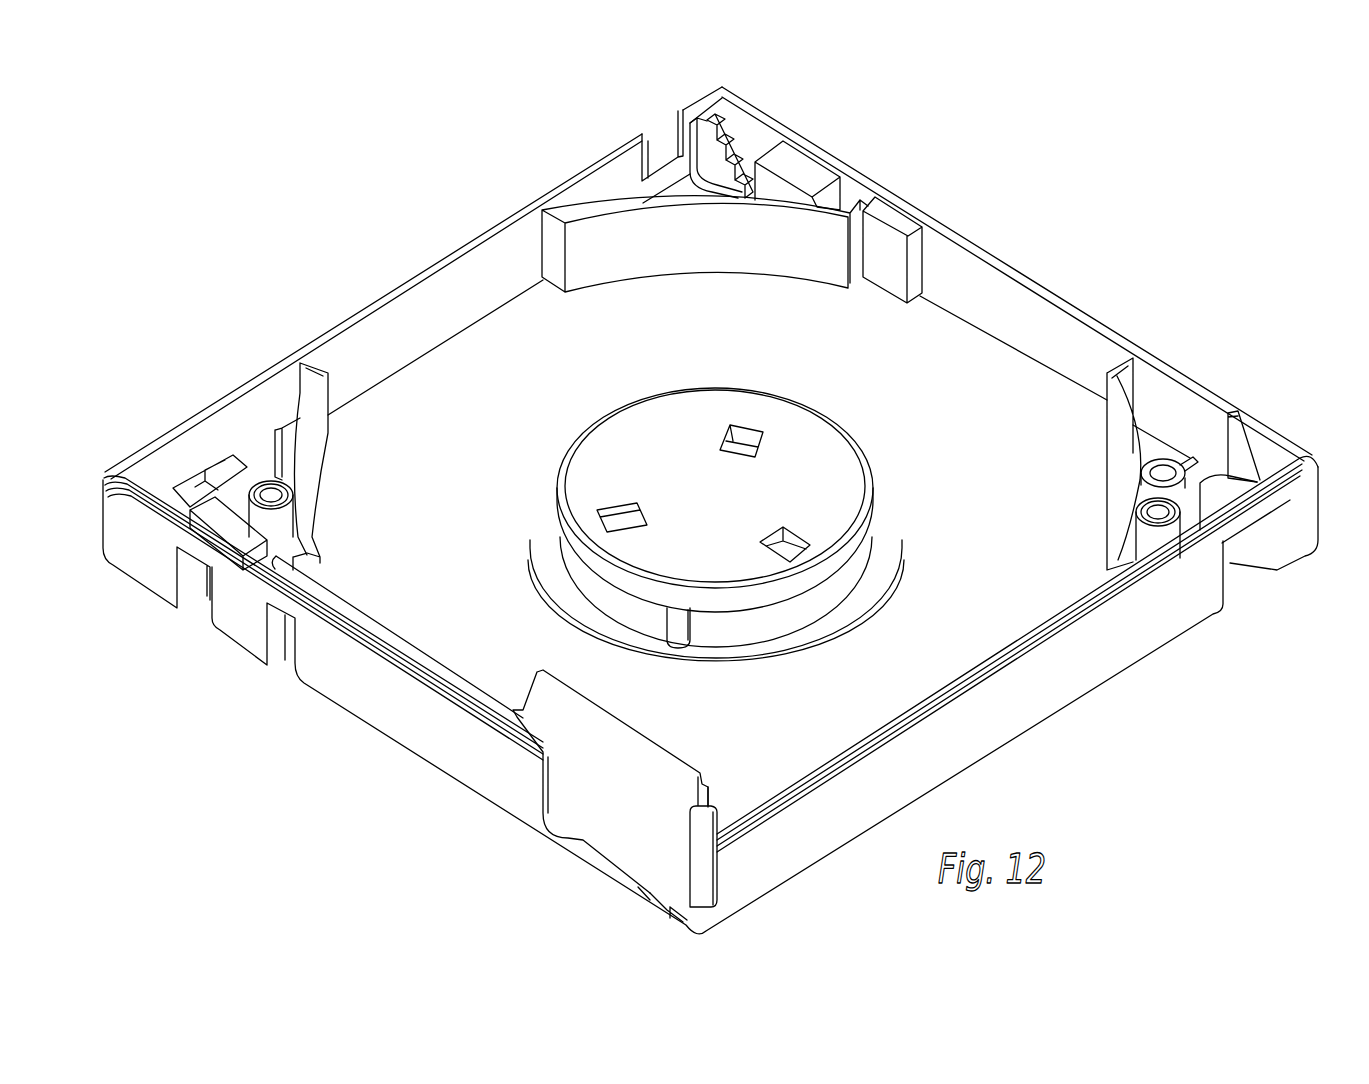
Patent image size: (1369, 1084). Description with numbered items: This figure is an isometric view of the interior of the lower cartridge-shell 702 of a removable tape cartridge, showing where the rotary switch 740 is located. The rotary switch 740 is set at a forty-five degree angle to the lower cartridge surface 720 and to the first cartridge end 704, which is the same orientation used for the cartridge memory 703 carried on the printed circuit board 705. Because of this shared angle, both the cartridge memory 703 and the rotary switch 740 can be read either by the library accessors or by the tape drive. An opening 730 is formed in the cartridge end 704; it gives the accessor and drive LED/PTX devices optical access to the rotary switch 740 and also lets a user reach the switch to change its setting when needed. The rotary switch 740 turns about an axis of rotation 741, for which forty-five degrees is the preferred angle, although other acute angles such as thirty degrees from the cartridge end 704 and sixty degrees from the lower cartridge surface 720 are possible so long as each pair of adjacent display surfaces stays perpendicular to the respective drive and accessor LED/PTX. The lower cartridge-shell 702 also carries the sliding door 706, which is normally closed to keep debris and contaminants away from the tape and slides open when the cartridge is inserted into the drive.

The lower cartridge-shell 702 is at (433, 757).
The cartridge memory 703 is at (190, 497).
The first cartridge end 704 is at (420, 278).
The printed circuit board 705 is at (230, 457).
The sliding door 706 is at (600, 835).
The lower cartridge surface 720 is at (960, 383).
The opening 730 is at (662, 164).
The rotary switch 740 is at (723, 148).
The axis of rotation 741 is at (703, 116).